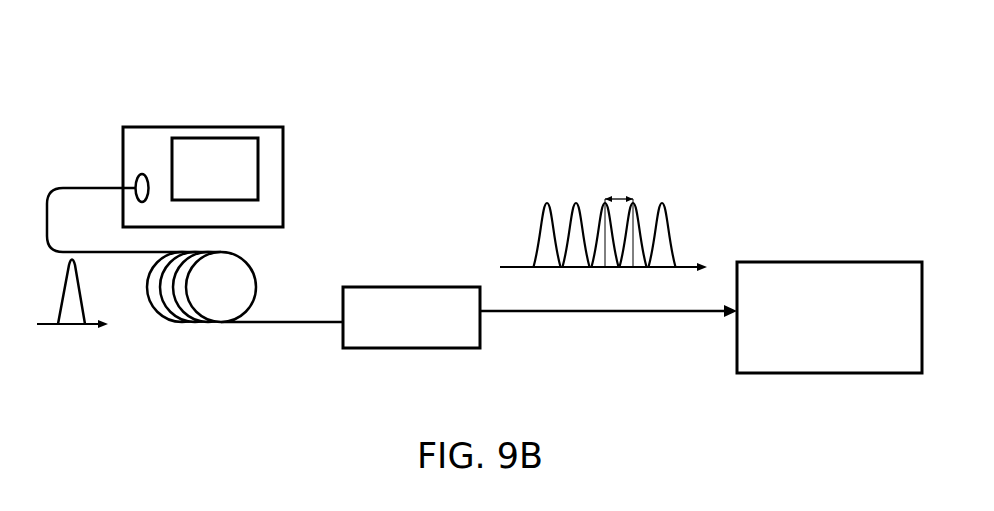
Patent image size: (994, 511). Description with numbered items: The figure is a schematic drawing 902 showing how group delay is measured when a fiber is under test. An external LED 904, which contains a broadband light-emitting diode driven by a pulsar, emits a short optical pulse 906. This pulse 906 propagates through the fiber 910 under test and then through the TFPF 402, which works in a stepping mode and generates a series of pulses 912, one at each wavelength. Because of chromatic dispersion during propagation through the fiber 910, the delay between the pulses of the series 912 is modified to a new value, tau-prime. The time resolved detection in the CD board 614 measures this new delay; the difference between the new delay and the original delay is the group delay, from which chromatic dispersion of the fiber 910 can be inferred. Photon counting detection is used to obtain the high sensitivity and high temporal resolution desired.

The schematic drawing 902 is at (160, 64).
The external LED 904 is at (283, 178).
The optical pulse 906 is at (82, 308).
The fiber under test 910 is at (215, 315).
The TFPF 402 is at (393, 334).
The CD board 614 is at (813, 324).
The series of pulses 912 is at (535, 178).